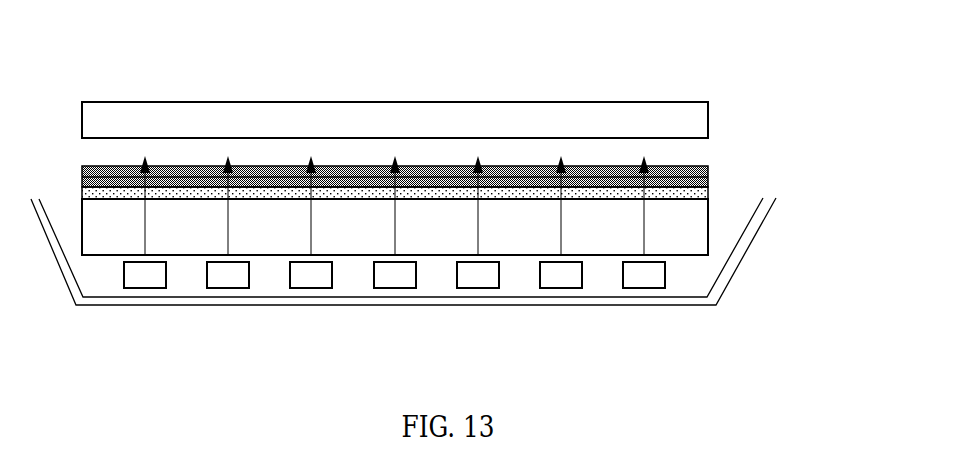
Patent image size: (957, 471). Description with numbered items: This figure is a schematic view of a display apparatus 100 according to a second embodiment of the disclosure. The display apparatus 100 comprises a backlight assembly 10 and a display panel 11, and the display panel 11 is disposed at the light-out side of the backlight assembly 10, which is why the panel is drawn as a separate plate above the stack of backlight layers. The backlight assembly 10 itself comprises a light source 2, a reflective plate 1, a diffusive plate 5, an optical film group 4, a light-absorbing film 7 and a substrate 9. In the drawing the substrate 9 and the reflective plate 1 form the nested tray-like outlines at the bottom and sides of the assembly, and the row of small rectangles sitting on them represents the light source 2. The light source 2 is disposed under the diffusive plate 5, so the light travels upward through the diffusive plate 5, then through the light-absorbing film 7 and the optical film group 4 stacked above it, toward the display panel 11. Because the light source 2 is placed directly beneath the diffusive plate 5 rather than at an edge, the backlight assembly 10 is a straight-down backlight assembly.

The display apparatus 100 is at (58, 46).
The display panel 11 is at (697, 120).
The backlight assembly 10 is at (458, 258).
The substrate 9 is at (725, 290).
The reflective plate 1 is at (728, 265).
The light source 2 is at (558, 277).
The diffusive plate 5 is at (687, 227).
The light-absorbing film 7 is at (708, 194).
The optical film group 4 is at (714, 167).